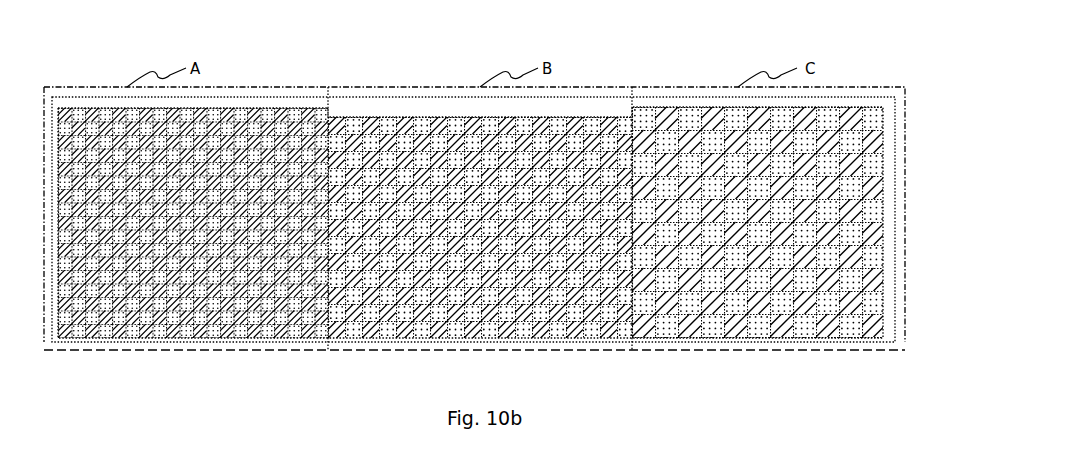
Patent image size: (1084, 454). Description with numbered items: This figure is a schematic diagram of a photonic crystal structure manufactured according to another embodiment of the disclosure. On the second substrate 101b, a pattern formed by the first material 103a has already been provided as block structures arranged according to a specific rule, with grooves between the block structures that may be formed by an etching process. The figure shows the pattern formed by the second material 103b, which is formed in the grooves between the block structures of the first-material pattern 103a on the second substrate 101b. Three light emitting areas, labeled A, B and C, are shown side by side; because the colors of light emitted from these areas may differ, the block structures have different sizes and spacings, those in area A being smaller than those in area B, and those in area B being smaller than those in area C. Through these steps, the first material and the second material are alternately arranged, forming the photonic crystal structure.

The second substrate 101b is at (883, 322).
The pattern formed by the first material 103a is at (881, 143).
The pattern formed by the second material 103b is at (879, 250).